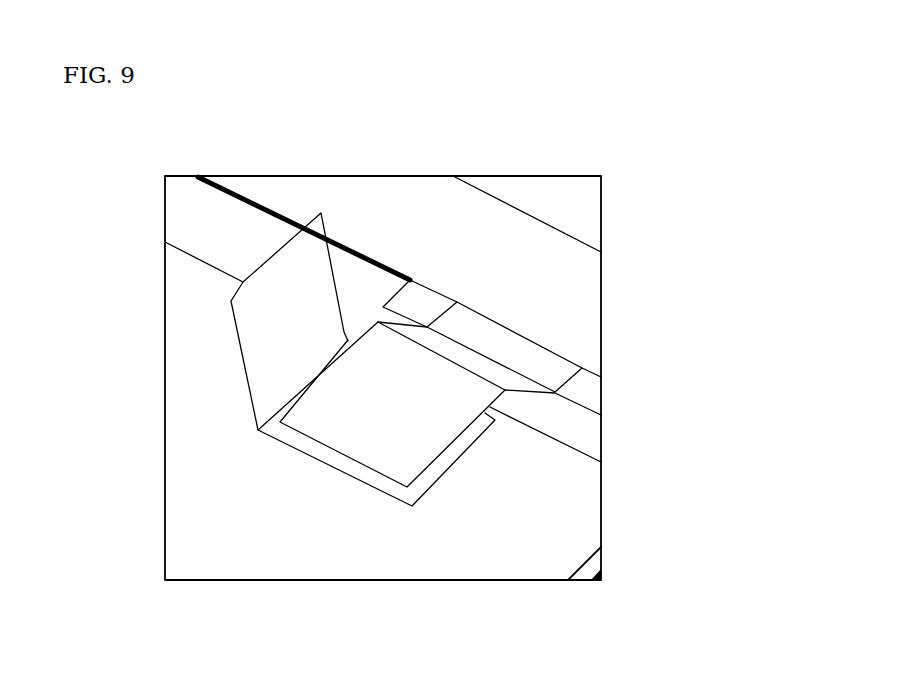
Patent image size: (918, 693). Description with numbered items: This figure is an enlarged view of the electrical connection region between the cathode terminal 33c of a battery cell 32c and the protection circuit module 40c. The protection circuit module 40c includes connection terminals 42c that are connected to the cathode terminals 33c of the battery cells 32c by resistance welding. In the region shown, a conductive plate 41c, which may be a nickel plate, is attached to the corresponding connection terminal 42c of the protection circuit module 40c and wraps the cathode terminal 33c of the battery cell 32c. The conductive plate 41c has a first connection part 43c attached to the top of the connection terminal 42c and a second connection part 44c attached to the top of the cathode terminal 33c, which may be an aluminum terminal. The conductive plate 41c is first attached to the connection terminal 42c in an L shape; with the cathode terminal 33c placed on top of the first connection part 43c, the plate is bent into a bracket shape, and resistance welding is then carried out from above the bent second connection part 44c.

The battery cell 32c is at (586, 209).
The cathode terminal 33c is at (468, 388).
The protection circuit module 40c is at (528, 550).
The conductive plate 41c is at (351, 491).
The connection terminal 42c is at (467, 457).
The first connection part 43c is at (287, 445).
The second connection part 44c is at (279, 313).